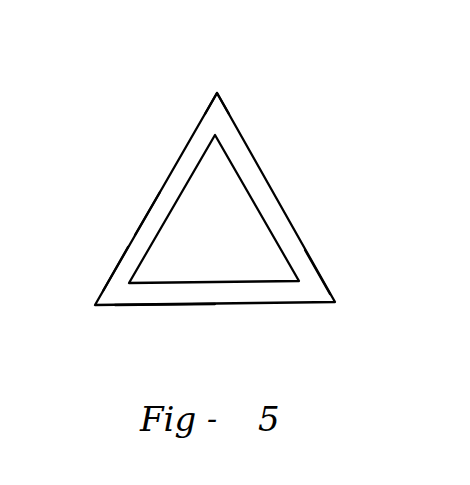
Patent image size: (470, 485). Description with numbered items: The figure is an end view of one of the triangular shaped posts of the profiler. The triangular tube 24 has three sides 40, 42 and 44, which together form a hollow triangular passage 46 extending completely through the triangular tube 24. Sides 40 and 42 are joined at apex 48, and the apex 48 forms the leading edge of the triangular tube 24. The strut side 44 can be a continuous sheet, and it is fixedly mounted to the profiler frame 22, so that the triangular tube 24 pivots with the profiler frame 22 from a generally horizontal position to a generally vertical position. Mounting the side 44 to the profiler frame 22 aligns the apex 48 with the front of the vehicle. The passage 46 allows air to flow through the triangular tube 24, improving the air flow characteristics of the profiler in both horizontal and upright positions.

The profiler frame 22 is at (323, 274).
The triangular tube 24 is at (115, 260).
The side 40 is at (255, 150).
The side 42 is at (148, 203).
The strut side 44 is at (144, 306).
The hollow triangular passage 46 is at (223, 232).
The apex 48 is at (217, 92).